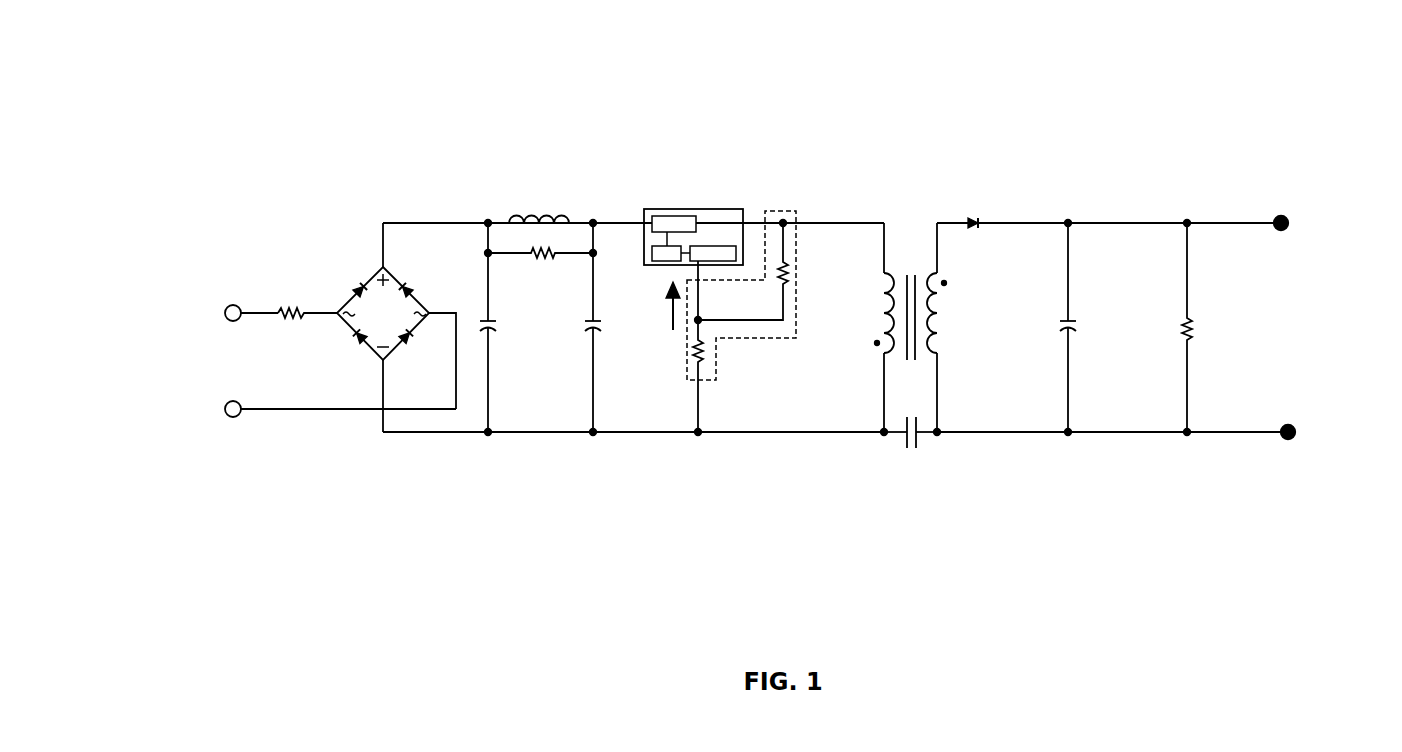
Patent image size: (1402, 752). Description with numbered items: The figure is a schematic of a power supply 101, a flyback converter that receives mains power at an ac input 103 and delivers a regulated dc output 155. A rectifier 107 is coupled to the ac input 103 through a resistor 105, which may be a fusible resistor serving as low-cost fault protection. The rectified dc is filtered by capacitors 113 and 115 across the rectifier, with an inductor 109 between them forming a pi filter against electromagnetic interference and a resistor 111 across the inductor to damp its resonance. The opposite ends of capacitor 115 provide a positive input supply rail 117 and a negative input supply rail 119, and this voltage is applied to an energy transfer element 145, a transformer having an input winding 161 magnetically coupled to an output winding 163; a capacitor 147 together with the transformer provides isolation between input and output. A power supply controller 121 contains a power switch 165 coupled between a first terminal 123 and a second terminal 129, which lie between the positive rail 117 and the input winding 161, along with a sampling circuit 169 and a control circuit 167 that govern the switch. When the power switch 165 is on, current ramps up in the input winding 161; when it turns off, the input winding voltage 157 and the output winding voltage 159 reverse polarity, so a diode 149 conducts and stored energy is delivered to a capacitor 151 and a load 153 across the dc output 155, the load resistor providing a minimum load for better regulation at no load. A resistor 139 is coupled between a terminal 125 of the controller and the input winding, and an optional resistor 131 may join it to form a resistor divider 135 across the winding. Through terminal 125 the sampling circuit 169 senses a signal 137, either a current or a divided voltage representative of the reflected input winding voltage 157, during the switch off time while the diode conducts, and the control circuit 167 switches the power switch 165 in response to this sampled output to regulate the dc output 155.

The power supply 101 is at (1269, 64).
The ac input 103 is at (153, 322).
The resistor 105 is at (283, 305).
The rectifier 107 is at (355, 275).
The inductor 109 is at (520, 215).
The resistor 111 is at (557, 268).
The capacitor 113 is at (497, 338).
The capacitor 115 is at (598, 334).
The positive input supply rail 117 is at (580, 215).
The negative input supply rail 119 is at (603, 440).
The power supply controller 121 is at (728, 208).
The first terminal 123 is at (630, 205).
The terminal 125 is at (680, 270).
The second terminal 129 is at (757, 205).
The optional resistor 131 is at (775, 283).
The resistor divider 135 is at (737, 343).
The signal 137 is at (670, 297).
The resistor 139 is at (688, 352).
The energy transfer element 145 is at (910, 265).
The capacitor 147 is at (915, 452).
The diode 149 is at (985, 220).
The capacitor 151 is at (1085, 338).
The load 153 is at (1201, 336).
The dc output 155 is at (1368, 288).
The voltage V1 157 is at (857, 320).
The voltage V2 159 is at (987, 300).
The input winding 161 is at (875, 358).
The output winding 163 is at (951, 360).
The power switch 165 is at (675, 210).
The control circuit 167 is at (652, 250).
The sampling circuit 169 is at (736, 259).